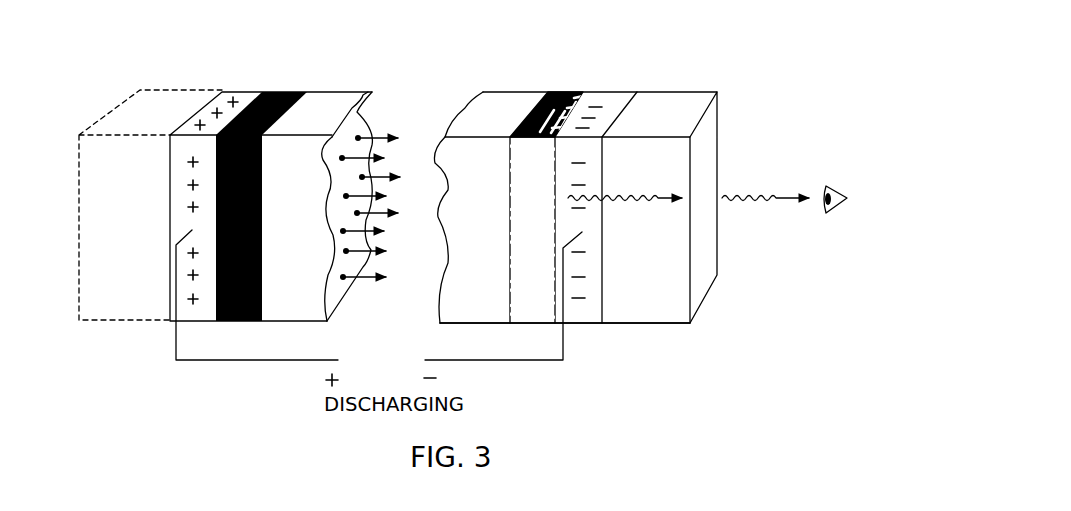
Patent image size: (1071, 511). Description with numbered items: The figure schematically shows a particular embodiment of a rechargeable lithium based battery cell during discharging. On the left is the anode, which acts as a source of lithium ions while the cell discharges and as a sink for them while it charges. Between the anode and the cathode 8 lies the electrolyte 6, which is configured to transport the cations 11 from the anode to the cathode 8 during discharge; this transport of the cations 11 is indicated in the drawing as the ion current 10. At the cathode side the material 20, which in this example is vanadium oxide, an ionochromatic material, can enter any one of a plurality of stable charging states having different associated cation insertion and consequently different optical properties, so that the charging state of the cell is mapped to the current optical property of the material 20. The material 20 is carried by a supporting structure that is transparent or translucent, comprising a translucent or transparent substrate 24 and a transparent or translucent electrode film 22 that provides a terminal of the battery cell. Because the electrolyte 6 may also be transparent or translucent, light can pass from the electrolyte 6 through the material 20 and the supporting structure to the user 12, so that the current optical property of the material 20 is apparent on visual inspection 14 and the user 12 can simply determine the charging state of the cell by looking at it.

The electrolyte 6 is at (495, 107).
The cathode 8 is at (596, 338).
The ion current 10 is at (408, 226).
The cations 11 is at (418, 143).
The user 12 is at (833, 188).
The visual inspection 14 is at (738, 192).
The material 20 is at (577, 84).
The transparent conductive layer 22 is at (626, 84).
The substrate 24 is at (696, 84).